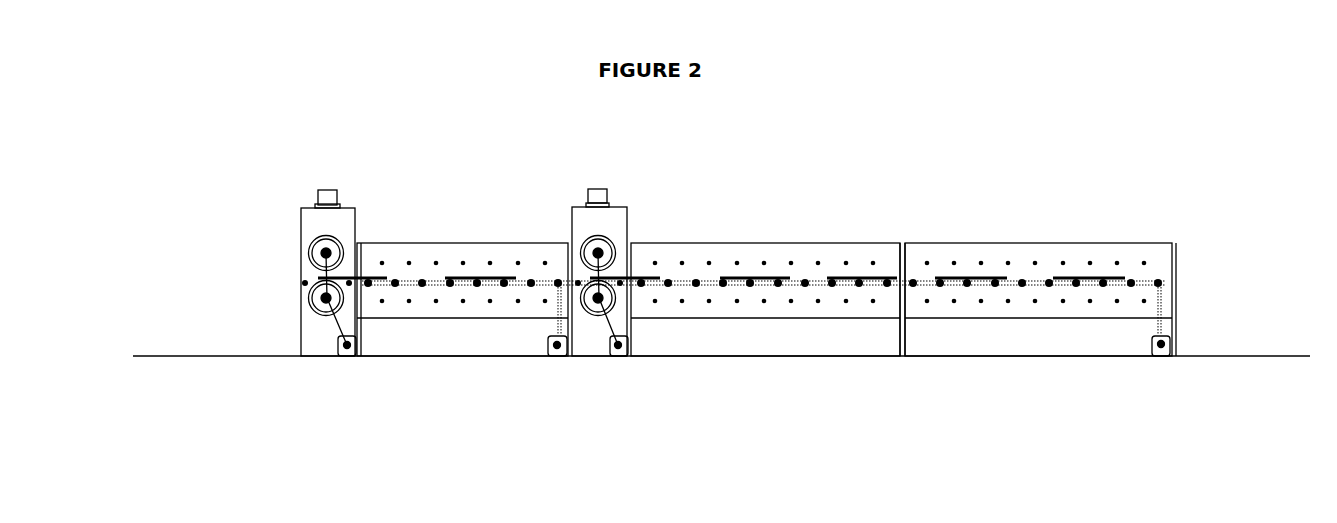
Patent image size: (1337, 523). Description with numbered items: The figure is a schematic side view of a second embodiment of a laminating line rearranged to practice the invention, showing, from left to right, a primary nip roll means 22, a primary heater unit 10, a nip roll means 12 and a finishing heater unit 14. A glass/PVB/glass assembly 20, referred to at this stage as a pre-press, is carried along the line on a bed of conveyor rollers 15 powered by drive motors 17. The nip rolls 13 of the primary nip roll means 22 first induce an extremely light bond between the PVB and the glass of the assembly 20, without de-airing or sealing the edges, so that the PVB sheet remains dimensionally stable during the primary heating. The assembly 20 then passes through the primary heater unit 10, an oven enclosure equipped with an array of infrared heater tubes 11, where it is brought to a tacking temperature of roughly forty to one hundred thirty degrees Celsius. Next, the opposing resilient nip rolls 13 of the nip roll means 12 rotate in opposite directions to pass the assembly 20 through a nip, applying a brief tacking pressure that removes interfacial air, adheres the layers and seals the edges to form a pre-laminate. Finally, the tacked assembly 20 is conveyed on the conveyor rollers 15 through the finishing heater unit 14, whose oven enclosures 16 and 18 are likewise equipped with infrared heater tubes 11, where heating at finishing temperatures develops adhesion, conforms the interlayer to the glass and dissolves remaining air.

The primary heater unit 10 is at (461, 322).
The infrared heater tubes 11 is at (763, 240).
The nip roll means 12 is at (620, 195).
The nip rolls 13 is at (575, 242).
The finishing heater unit 14 is at (907, 366).
The conveyor rollers 15 is at (733, 261).
The oven enclosure 16 is at (836, 236).
The drive motor 17 is at (341, 360).
The oven enclosure 18 is at (1043, 231).
The glass/PVB/glass assembly 20 is at (470, 277).
The primary nip roll means 22 is at (303, 197).